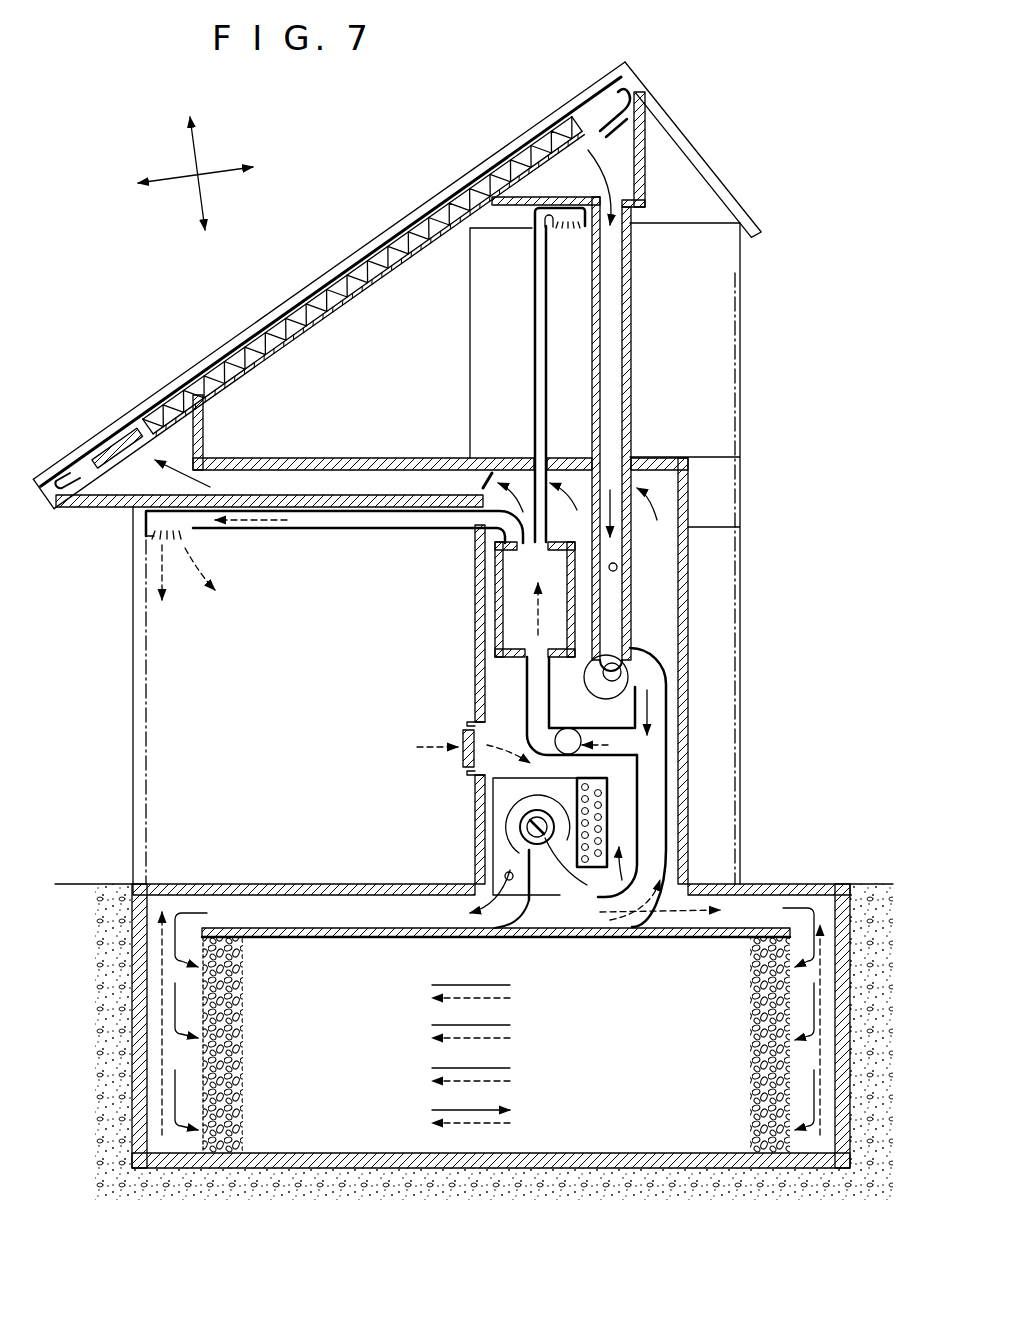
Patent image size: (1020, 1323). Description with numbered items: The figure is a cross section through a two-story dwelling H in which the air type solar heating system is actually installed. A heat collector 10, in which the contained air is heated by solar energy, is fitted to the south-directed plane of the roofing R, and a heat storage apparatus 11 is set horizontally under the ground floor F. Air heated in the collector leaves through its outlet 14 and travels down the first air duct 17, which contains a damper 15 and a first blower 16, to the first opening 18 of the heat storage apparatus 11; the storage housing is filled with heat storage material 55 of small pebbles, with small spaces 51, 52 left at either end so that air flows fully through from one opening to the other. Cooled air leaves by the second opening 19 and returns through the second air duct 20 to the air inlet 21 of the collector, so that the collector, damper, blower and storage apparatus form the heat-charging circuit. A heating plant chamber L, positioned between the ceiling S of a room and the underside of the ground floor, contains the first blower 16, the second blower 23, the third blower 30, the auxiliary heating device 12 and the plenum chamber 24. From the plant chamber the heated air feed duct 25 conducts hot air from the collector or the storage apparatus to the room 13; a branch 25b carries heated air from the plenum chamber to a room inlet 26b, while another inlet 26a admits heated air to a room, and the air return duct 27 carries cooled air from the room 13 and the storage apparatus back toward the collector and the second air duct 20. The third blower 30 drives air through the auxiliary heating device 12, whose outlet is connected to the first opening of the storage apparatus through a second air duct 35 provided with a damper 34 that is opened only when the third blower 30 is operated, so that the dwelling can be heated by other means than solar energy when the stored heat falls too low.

The heat collector 10 is at (360, 250).
The heat storage apparatus 11 is at (553, 1150).
The auxiliary heating device 12 is at (620, 832).
The room 13 is at (578, 404).
The outlet of the heat collector 14 is at (588, 138).
The damper 15 is at (617, 571).
The first blower 16 is at (620, 672).
The first air duct 17 is at (615, 352).
The first opening of the heat storage apparatus 18 is at (768, 900).
The second opening of the heat storage apparatus 19 is at (205, 910).
The second air duct 20 is at (668, 778).
The air inlet of the heat collector 21 is at (132, 453).
The second blower 23 is at (569, 729).
The plenum chamber 24 is at (497, 585).
The heated air feed duct 25 is at (533, 675).
The branch of the heated air feed duct 25b is at (540, 347).
The inlet 26a is at (156, 541).
The inlet 26b is at (566, 238).
The air return duct 27 is at (468, 733).
The third blower 30 is at (527, 826).
The damper 34 is at (531, 900).
The second air duct 35 is at (500, 880).
The small space 51 is at (200, 1057).
The small space 52 is at (793, 1058).
The heat storage material 55 is at (243, 1041).
The ceiling S is at (483, 487).
The roofing R is at (366, 296).
The two-story dwelling H is at (745, 191).
The heating plant chamber L is at (657, 558).
The ground floor F is at (867, 882).